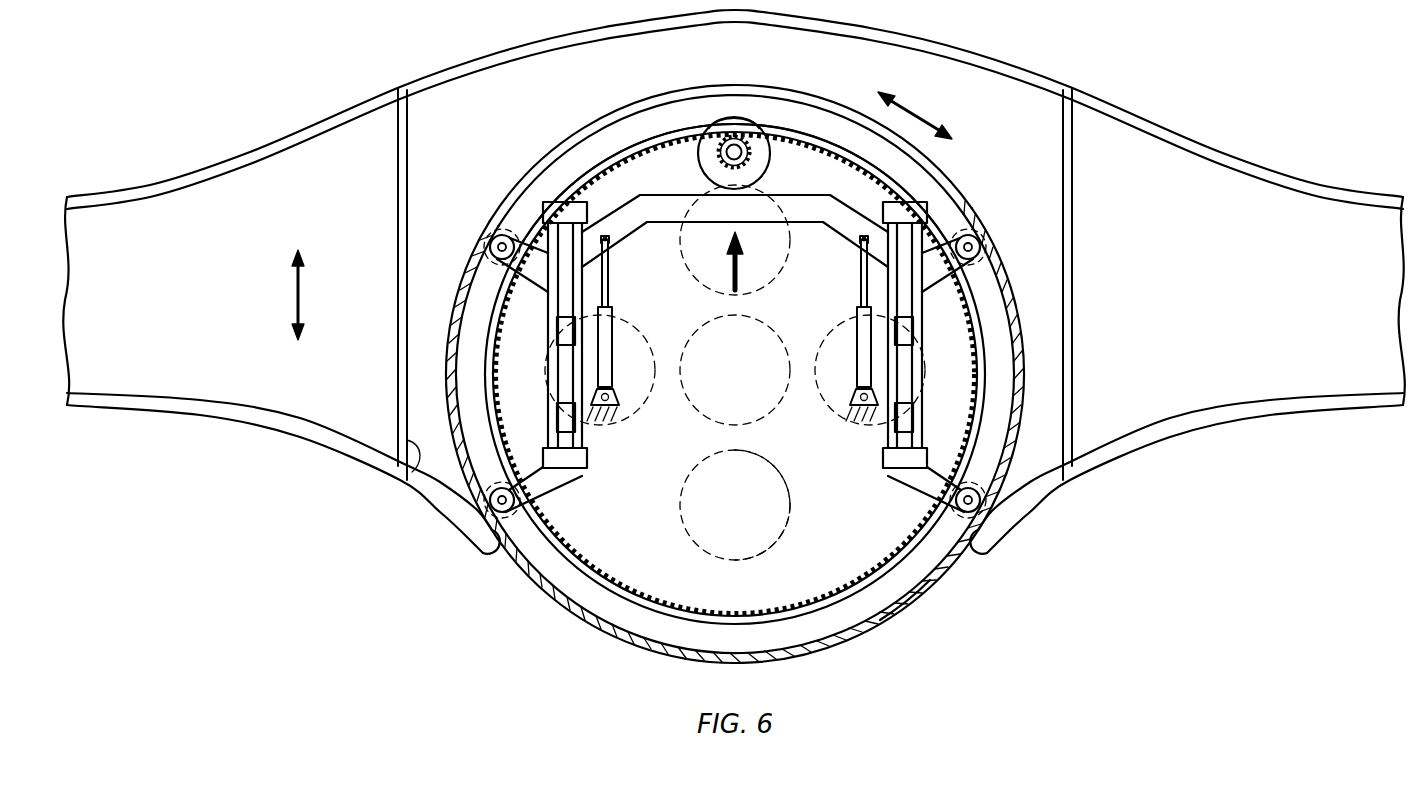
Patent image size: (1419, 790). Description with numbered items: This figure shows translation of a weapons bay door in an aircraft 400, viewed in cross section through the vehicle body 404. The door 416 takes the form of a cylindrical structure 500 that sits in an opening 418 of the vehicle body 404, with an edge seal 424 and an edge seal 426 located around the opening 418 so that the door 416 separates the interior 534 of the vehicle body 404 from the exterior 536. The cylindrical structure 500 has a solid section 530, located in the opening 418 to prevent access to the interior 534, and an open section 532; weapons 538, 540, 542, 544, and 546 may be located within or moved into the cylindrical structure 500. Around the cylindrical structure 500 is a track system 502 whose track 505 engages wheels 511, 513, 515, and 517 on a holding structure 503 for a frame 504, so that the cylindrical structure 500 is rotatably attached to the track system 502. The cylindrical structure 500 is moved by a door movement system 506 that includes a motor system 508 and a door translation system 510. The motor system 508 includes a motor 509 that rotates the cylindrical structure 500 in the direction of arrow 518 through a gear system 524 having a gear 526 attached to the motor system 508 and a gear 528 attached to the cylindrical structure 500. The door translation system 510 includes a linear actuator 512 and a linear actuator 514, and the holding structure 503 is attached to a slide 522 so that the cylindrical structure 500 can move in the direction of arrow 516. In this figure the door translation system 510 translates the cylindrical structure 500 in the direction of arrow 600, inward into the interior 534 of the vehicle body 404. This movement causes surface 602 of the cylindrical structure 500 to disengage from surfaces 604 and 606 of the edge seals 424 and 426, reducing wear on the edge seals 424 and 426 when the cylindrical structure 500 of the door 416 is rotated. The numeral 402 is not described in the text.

The aircraft 400 is at (268, 110).
The outer ring 402 is at (902, 631).
The vehicle body 404 is at (356, 106).
The door 416 is at (641, 650).
The opening 418 is at (516, 603).
The edge seal 424 is at (426, 496).
The edge seal 426 is at (1044, 496).
The cylindrical structure 500 is at (937, 574).
The track system 502 is at (508, 179).
The holding structure 503 is at (567, 379).
The frame 504 is at (547, 186).
The track 505 is at (602, 604).
The door movement system 506 is at (555, 121).
The motor system 508 is at (748, 104).
The motor 509 is at (733, 114).
The door translation system 510 is at (633, 327).
The wheel 511 is at (493, 213).
The linear actuator 512 is at (628, 402).
The wheel 513 is at (958, 215).
The linear actuator 514 is at (838, 330).
The wheel 515 is at (950, 518).
The arrow 516 is at (298, 292).
The wheel 517 is at (538, 521).
The arrow 518 is at (910, 113).
The slide 522 is at (548, 398).
The gear system 524 is at (700, 150).
The gear 526 is at (753, 155).
The gear 528 is at (629, 212).
The solid section 530 is at (830, 648).
The open section 532 is at (843, 78).
The interior 534 is at (480, 135).
The exterior 536 is at (325, 539).
The weapon 538 is at (591, 424).
The weapon 540 is at (778, 540).
The weapon 542 is at (743, 412).
The weapon 544 is at (694, 237).
The weapon 546 is at (733, 440).
The arrow 600 is at (742, 264).
The surface 602 is at (597, 626).
The surface 604 is at (407, 440).
The surface 606 is at (1058, 472).